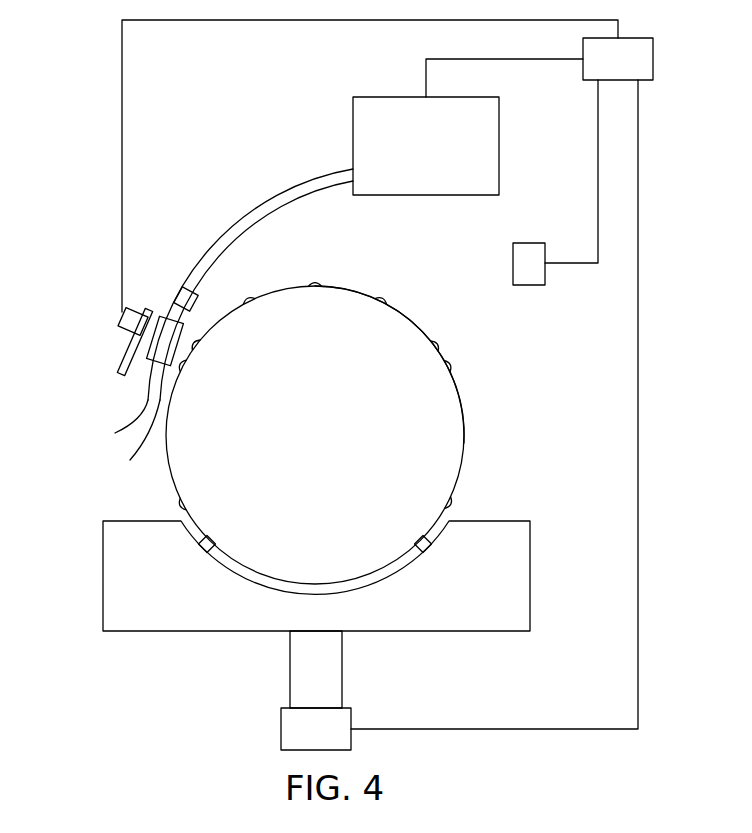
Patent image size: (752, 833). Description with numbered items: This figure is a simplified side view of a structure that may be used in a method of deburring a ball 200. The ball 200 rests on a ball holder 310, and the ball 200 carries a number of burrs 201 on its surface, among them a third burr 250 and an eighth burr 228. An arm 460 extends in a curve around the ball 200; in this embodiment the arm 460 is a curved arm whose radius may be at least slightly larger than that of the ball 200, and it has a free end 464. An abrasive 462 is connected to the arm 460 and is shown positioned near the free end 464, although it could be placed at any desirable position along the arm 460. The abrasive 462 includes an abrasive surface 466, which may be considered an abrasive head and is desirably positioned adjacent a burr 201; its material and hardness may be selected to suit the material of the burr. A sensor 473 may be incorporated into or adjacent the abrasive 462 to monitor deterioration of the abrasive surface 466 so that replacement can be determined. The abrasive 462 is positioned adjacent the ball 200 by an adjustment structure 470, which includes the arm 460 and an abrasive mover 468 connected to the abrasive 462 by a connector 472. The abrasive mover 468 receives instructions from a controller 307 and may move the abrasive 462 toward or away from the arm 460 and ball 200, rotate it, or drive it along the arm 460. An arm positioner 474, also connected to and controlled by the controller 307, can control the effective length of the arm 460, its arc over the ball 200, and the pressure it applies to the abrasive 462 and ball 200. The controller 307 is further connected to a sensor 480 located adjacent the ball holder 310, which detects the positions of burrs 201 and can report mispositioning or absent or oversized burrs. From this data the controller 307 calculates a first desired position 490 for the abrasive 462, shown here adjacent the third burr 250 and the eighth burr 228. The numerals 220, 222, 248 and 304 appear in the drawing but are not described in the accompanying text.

The ball 200 is at (483, 402).
The burr 201 is at (316, 282).
The pipe wall 220 is at (464, 443).
The sensor 222 is at (440, 340).
The eighth burr 228 is at (194, 337).
The sensor 248 is at (456, 361).
The third burr 250 is at (129, 446).
The support stand 304 is at (256, 694).
The controller 307 is at (618, 59).
The ball holder 310 is at (530, 549).
The arm 460 is at (296, 186).
The abrasive 462 is at (106, 427).
The free end 464 is at (118, 375).
The abrasive surface 466 is at (186, 353).
The abrasive mover 468 is at (117, 315).
The adjustment structure 470 is at (339, 90).
The connector 472 is at (153, 318).
The sensor 473 is at (197, 289).
The arm positioner 474 is at (392, 96).
The sensor 480 is at (529, 243).
The first desired position 490 is at (148, 378).